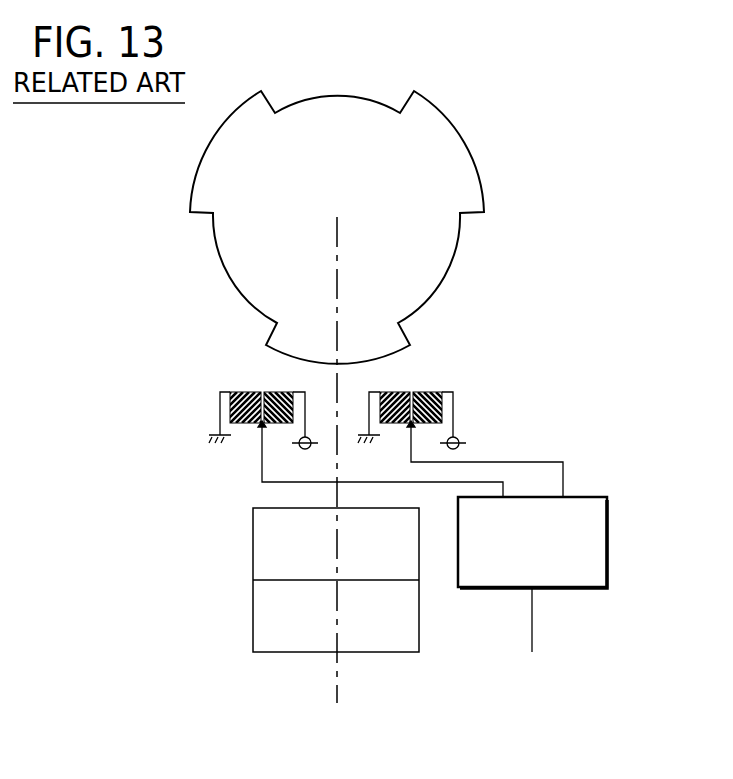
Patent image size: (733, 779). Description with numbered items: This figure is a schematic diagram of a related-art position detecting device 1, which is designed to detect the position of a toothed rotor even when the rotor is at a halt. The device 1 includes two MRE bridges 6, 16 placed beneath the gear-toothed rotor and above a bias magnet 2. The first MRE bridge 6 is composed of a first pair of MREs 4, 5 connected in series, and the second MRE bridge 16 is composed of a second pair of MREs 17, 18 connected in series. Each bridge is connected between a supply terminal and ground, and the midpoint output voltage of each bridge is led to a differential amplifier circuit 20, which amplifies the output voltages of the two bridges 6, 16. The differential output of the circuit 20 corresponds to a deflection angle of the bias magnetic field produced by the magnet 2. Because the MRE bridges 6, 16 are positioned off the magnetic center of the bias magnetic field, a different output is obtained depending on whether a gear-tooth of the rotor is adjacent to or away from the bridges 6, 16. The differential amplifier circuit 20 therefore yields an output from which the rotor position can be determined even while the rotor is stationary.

The position detecting device 1 is at (466, 126).
The magnet 2 is at (277, 620).
The MRE 4 is at (277, 392).
The MRE 5 is at (245, 392).
The MRE bridge 6 is at (289, 389).
The MRE bridge 16 is at (484, 389).
The MRE 17 is at (428, 392).
The MRE 18 is at (402, 392).
The differential amplifier circuit 20 is at (616, 502).